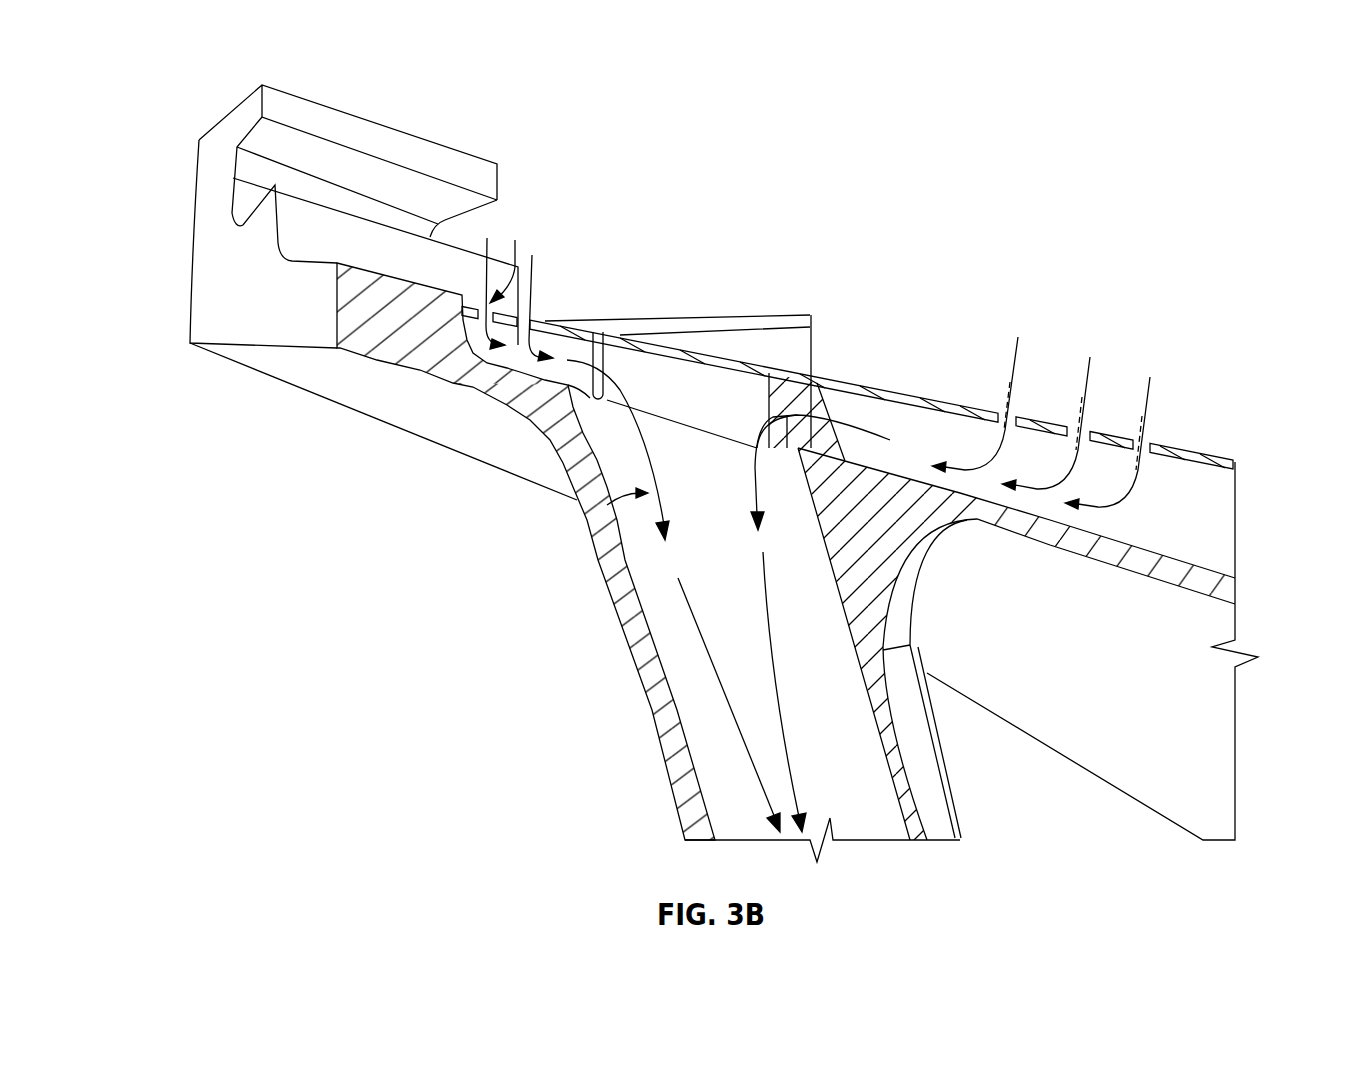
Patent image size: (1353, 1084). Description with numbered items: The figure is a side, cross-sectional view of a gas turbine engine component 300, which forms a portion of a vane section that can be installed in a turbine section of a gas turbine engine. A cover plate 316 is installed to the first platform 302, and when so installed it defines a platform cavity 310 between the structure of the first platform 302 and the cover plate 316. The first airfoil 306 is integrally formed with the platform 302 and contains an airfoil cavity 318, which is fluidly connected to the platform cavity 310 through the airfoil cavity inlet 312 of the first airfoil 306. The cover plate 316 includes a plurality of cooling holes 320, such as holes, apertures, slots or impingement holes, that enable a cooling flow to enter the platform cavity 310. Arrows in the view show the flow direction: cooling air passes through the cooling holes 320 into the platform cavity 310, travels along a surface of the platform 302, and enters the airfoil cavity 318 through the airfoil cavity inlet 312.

The gas turbine engine component 300 is at (185, 106).
The first platform 302 is at (190, 340).
The first airfoil 306 is at (652, 766).
The platform cavity 310 is at (470, 320).
The airfoil cavity inlet 312 is at (592, 527).
The cover plate 316 is at (543, 313).
The airfoil cavity 318 is at (748, 597).
The cooling holes 320 is at (1176, 392).